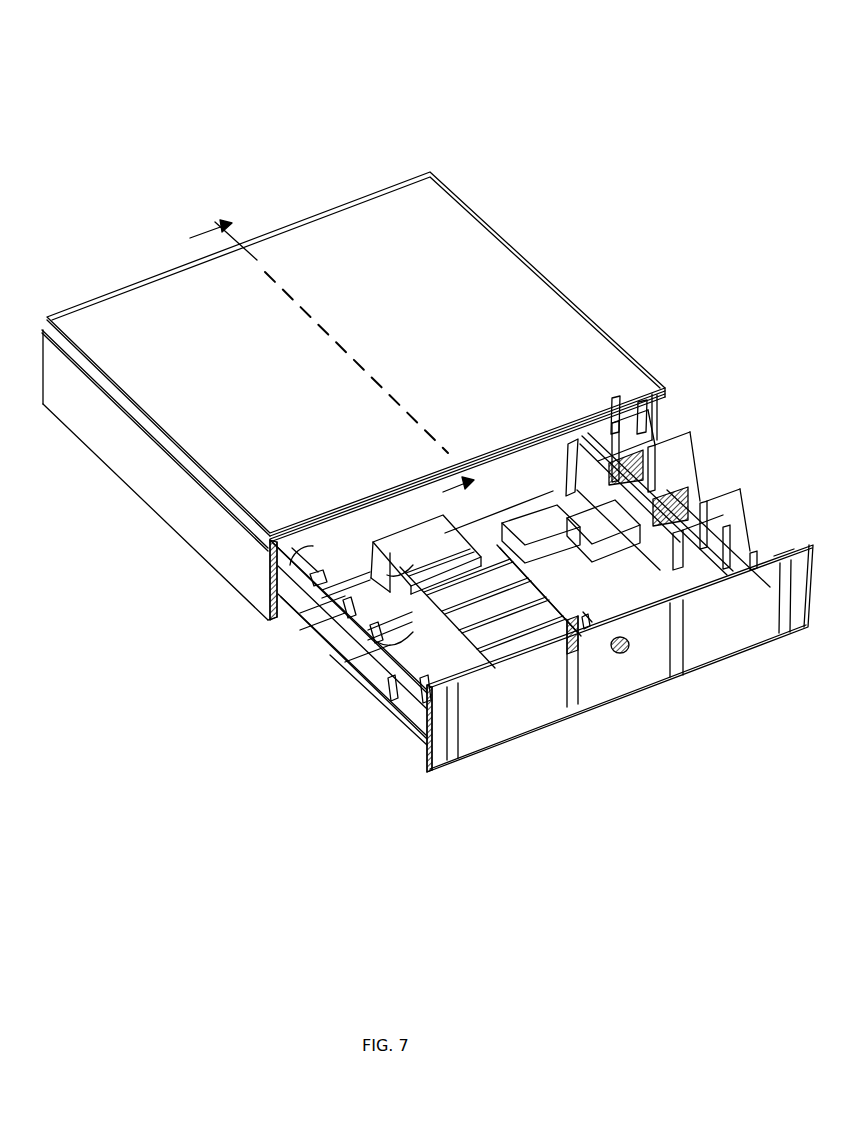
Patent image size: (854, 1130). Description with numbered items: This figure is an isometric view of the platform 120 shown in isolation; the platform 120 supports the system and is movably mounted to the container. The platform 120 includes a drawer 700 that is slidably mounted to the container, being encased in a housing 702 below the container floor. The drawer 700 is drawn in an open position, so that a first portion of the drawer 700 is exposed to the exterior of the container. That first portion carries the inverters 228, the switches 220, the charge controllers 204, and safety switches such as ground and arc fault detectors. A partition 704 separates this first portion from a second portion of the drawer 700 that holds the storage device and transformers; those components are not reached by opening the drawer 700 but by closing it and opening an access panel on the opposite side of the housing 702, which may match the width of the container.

The platform 120 is at (208, 101).
The housing 702 is at (113, 452).
The partition 704 is at (312, 542).
The drawer 700 is at (428, 772).
The inverters 228 is at (360, 575).
The switches 220 is at (417, 630).
The charge controllers 204 is at (683, 507).